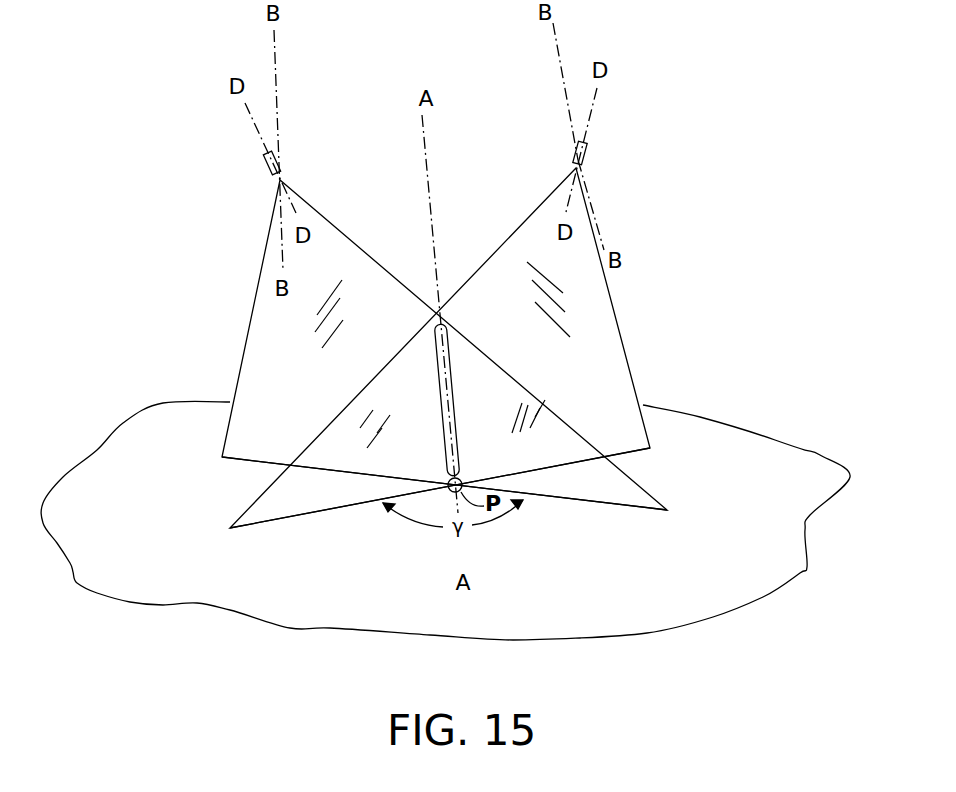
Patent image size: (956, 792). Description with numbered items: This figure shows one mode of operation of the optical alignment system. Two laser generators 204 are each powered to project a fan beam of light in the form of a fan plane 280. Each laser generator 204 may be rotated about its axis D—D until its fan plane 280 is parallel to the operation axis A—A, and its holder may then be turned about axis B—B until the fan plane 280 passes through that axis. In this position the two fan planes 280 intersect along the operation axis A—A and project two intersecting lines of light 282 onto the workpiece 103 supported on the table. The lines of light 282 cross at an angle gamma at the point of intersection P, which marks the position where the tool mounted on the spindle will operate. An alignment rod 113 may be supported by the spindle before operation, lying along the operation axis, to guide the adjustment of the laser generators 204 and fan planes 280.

The workpiece 103 is at (445, 520).
The alignment rod 113 is at (447, 348).
The laser generator 204 is at (259, 170).
The fan plane 280 is at (270, 330).
The line of light 282 is at (320, 515).